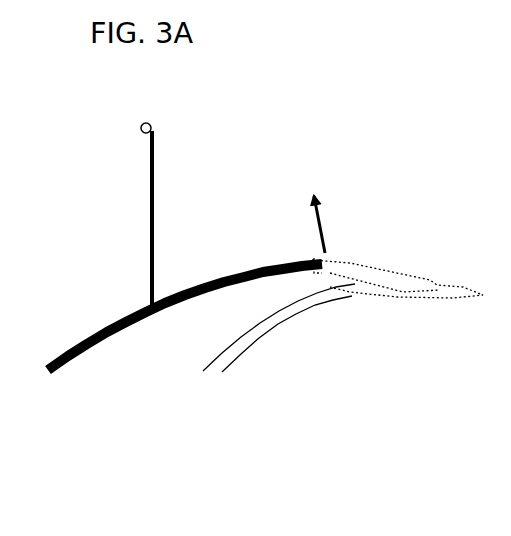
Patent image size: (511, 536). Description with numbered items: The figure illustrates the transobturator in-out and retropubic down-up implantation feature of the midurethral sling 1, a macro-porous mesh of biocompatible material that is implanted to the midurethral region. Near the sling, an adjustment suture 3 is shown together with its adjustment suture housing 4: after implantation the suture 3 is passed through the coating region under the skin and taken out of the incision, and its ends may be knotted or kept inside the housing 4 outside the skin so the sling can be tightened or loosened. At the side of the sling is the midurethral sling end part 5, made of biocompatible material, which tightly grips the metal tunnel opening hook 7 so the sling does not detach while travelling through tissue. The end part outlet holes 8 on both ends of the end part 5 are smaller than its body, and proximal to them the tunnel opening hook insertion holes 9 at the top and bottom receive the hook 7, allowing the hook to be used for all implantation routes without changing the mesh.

The midurethral sling 1 is at (76, 368).
The adjustment suture 3 is at (157, 190).
The adjustment suture housing 4 is at (156, 131).
The midurethral sling end part 5 is at (380, 265).
The tunnel opening hook 7 is at (268, 338).
The end part outlet holes 8 is at (345, 280).
The tunnel opening hook insertion holes 9 is at (397, 298).